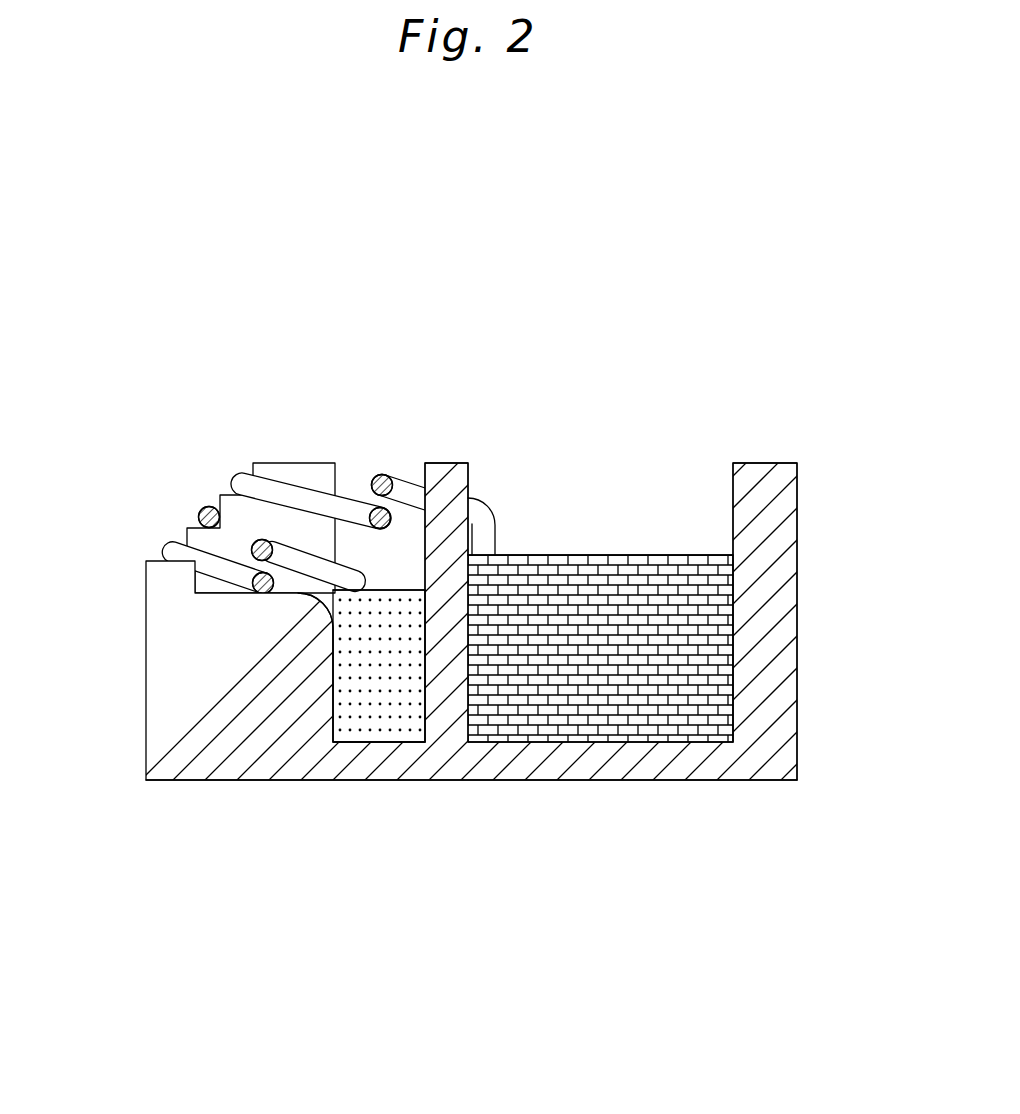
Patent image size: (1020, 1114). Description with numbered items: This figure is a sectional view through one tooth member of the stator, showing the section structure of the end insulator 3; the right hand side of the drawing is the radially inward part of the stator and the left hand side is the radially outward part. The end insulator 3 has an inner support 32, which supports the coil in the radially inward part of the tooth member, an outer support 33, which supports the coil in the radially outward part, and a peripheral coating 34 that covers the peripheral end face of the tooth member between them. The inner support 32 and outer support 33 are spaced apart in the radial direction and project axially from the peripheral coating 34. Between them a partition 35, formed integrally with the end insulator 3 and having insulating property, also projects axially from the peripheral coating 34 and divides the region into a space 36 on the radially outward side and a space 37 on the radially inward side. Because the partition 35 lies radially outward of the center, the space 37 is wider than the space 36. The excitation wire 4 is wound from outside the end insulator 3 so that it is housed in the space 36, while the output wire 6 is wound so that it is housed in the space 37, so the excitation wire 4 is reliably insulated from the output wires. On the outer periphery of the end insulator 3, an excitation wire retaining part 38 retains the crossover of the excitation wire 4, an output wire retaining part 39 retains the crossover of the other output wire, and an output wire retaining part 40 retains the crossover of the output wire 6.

The end insulator 3 is at (530, 628).
The excitation wire 4 is at (397, 723).
The output wire 6 is at (567, 515).
The inner support 32 is at (797, 522).
The outer support 33 is at (337, 723).
The peripheral coating 34 is at (567, 780).
The partition 35 is at (447, 463).
The space 36 is at (383, 540).
The space 37 is at (695, 447).
The excitation wire retaining part 38 is at (147, 508).
The output wire retaining part 39 is at (193, 468).
The output wire retaining part 40 is at (260, 435).